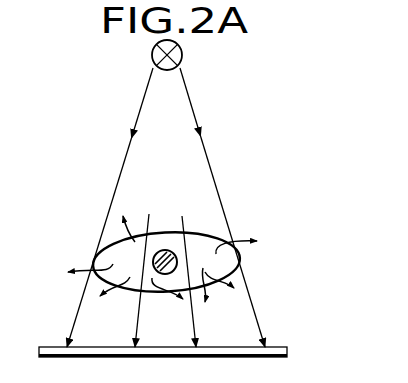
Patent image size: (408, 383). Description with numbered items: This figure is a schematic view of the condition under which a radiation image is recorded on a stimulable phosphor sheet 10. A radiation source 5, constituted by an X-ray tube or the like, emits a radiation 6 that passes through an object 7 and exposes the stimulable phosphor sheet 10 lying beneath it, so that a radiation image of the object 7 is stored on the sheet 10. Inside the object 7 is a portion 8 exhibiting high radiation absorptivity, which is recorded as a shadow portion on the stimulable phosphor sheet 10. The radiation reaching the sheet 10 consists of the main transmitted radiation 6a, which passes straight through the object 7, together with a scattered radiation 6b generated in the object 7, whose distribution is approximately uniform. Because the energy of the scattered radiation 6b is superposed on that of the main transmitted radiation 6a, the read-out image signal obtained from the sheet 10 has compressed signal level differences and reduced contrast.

The radiation source 5 is at (182, 52).
The radiation 6 is at (190, 102).
The object 7 is at (112, 249).
The portion exhibiting high radiation absorptivity 8 is at (169, 250).
The main transmitted radiation 6a is at (137, 312).
The scattered radiation 6b is at (209, 292).
The stimulable phosphor sheet 10 is at (287, 347).